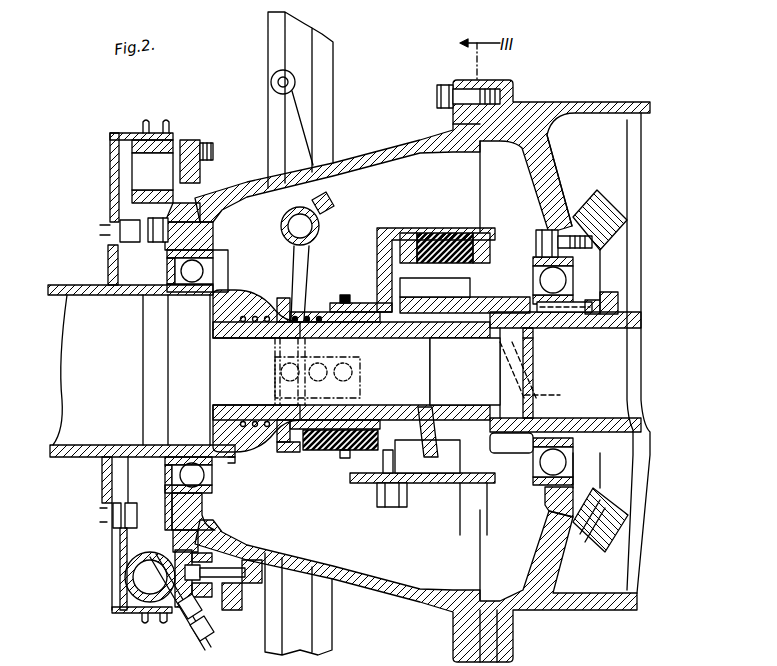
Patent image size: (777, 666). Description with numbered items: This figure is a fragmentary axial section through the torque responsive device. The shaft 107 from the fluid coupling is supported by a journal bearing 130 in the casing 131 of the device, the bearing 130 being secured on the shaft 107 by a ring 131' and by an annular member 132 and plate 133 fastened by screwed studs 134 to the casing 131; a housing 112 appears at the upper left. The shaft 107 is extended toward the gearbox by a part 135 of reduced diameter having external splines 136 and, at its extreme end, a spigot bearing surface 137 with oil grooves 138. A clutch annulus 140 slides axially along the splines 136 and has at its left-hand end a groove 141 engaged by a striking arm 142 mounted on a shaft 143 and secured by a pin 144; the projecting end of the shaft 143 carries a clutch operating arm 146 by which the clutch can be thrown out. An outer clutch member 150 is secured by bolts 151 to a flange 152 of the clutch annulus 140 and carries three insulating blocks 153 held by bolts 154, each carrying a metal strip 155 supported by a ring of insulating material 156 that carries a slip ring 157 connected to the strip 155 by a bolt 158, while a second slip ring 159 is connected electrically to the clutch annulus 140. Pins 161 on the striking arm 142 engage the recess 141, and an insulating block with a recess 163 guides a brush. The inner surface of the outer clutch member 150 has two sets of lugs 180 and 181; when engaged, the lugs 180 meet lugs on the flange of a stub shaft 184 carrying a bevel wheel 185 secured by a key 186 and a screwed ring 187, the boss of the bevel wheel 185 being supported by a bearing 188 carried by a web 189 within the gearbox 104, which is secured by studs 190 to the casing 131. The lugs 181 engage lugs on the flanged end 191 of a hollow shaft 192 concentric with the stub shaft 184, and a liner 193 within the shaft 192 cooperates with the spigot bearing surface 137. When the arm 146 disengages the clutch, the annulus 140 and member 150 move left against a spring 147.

The gearbox 104 is at (552, 110).
The shaft 107 is at (95, 458).
The upper housing 112 is at (130, 133).
The journal bearing 130 is at (135, 297).
The casing 131 is at (422, 371).
The ring 131' is at (237, 271).
The annular member 132 is at (205, 248).
The plate 133 is at (183, 268).
The screwed studs 134 is at (148, 225).
The part of reduced diameter 135 is at (262, 338).
The external splines 136 is at (420, 445).
The spigot bearing surface 137 is at (528, 342).
The oil grooves 138 is at (530, 388).
The clutch annulus 140 is at (338, 342).
The groove 141 is at (282, 445).
The striking arm 142 is at (305, 265).
The shaft 143 is at (320, 214).
The pin 144 is at (305, 212).
The clutch operating arm 146 is at (285, 120).
The spring 147 is at (272, 425).
The outer clutch member 150 is at (480, 483).
The bolts 151 is at (392, 508).
The flange 152 is at (372, 485).
The insulating blocks 153 is at (444, 233).
The bolts 154 is at (410, 232).
The metal strips 155 is at (385, 232).
The ring of insulating material 156 is at (320, 452).
The slip ring 157 is at (345, 297).
The bolt 158 is at (335, 303).
The second slip ring 159 is at (325, 316).
The pins 161 is at (274, 380).
The recess 163 is at (475, 345).
The lugs 180 is at (490, 288).
The lugs 181 is at (355, 338).
The stub shaft 184 is at (545, 282).
The bevel wheel 185 is at (600, 212).
The key 186 is at (560, 320).
The screwed ring 187 is at (607, 315).
The bearing 188 is at (565, 228).
The web 189 is at (548, 160).
The studs 190 is at (470, 95).
The flanged end 191 is at (450, 340).
The shaft 192 is at (592, 315).
The liner 193 is at (470, 313).